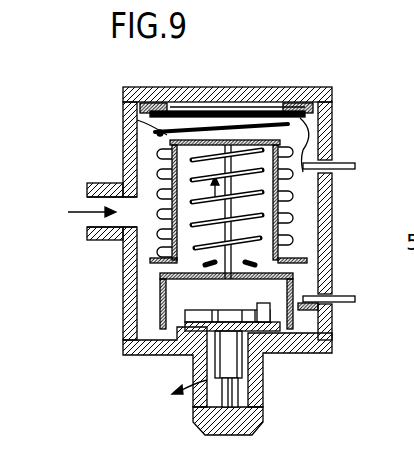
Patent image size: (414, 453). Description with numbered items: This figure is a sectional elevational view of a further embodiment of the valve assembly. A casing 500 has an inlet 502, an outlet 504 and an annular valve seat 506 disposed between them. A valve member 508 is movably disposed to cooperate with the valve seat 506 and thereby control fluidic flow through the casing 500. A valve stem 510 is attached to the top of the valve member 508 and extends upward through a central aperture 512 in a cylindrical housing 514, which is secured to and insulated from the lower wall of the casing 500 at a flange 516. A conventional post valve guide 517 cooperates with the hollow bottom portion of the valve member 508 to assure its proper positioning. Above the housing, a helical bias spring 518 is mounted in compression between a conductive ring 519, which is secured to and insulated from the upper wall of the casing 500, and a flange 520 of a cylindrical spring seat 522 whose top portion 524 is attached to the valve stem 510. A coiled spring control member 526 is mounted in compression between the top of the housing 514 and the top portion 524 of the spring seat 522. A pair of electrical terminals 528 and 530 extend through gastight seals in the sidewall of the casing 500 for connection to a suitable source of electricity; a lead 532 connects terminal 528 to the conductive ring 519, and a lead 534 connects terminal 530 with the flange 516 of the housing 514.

The casing 500 is at (332, 97).
The inlet 502 is at (100, 216).
The outlet 504 is at (202, 402).
The annular valve seat 506 is at (176, 347).
The valve member 508 is at (274, 325).
The valve stem 510 is at (306, 222).
The central aperture 512 is at (218, 284).
The cylindrical housing 514 is at (163, 285).
The flange 516 is at (163, 323).
The post valve guide 517 is at (250, 398).
The helical bias spring 518 is at (160, 135).
The conductive ring 519 is at (182, 104).
The flange 520 is at (163, 262).
The cylindrical spring seat 522 is at (295, 190).
The top portion 524 is at (253, 141).
The coiled spring control member 526 is at (198, 176).
The electrical terminal 528 is at (352, 168).
The electrical terminal 530 is at (347, 298).
The lead 532 is at (318, 140).
The lead 534 is at (318, 325).